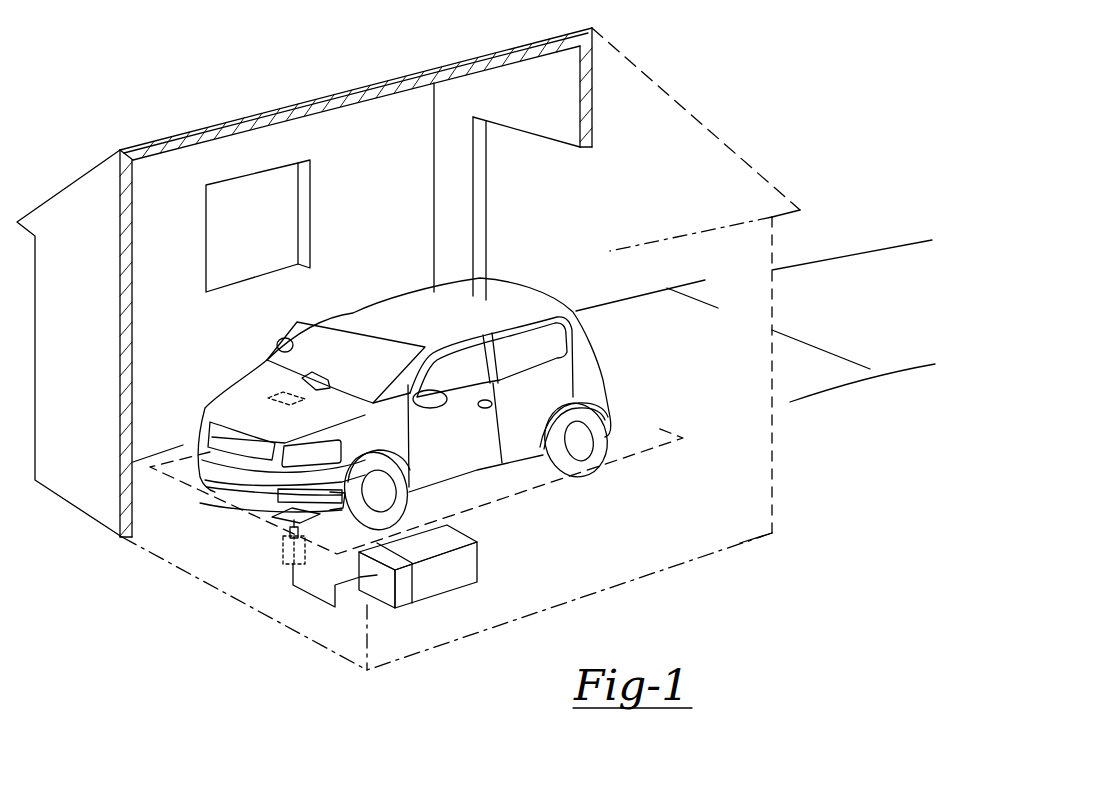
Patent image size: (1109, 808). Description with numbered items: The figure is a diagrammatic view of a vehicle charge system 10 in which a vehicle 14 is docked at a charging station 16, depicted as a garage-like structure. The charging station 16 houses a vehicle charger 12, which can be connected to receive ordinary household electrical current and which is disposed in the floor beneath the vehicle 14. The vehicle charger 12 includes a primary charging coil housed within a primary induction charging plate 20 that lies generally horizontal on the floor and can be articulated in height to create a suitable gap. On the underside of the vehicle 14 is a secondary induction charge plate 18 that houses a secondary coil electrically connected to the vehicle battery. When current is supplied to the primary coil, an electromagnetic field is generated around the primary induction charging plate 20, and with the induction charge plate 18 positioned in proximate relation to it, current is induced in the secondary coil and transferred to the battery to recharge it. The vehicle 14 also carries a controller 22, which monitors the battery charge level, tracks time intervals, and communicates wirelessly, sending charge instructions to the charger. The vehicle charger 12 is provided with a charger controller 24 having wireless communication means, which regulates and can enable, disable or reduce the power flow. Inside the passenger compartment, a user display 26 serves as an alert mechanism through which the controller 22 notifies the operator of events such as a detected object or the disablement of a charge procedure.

The vehicle charge system 10 is at (258, 319).
The vehicle charger 12 is at (449, 603).
The vehicle 14 is at (502, 292).
The charging station 16 is at (616, 546).
The induction charge plate 18 is at (310, 491).
The primary induction charging plate 20 is at (285, 518).
The controller 22 is at (262, 405).
The charger controller 24 is at (280, 553).
The user display 26 is at (312, 378).